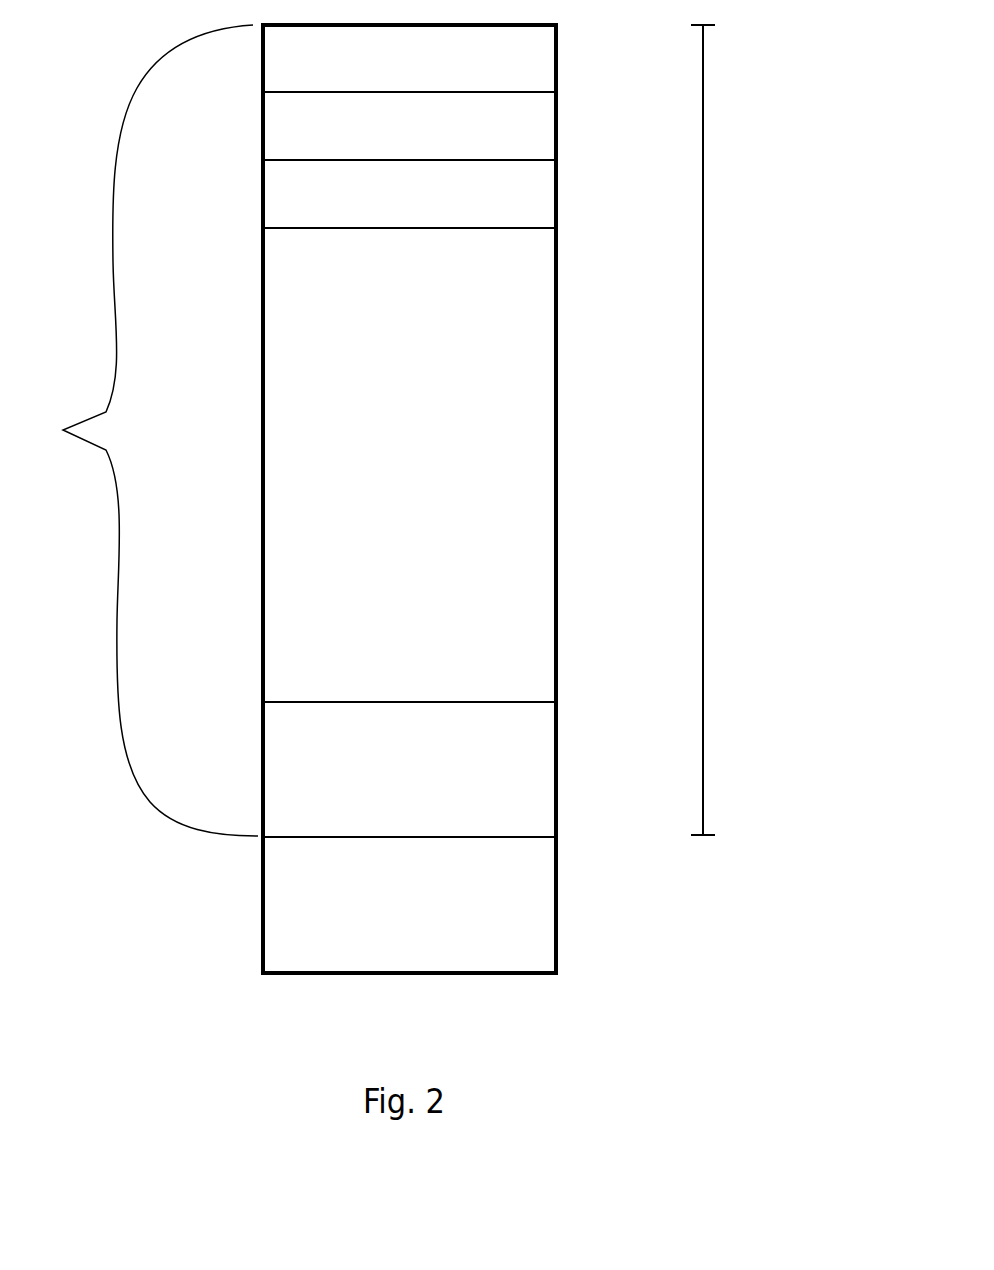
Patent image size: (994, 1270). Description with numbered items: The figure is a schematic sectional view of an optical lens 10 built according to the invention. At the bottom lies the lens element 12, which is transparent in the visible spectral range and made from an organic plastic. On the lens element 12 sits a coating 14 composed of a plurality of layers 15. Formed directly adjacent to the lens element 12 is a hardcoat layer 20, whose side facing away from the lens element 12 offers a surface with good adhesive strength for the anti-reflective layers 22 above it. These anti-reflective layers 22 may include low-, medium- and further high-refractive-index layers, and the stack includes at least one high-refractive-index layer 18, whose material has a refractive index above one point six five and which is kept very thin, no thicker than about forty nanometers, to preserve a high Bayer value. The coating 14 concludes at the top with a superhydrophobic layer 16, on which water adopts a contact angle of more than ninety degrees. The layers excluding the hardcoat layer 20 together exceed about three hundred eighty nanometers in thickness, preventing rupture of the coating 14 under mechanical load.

The optical lens 10 is at (221, 1008).
The lens element 12 is at (541, 949).
The coating 14 is at (703, 587).
The plurality of layers 15 is at (145, 430).
The superhydrophobic layer 16 is at (278, 78).
The high-refractive-index layer 18 is at (278, 196).
The hardcoat layer 20 is at (280, 775).
The anti-reflective layers 22 is at (280, 498).